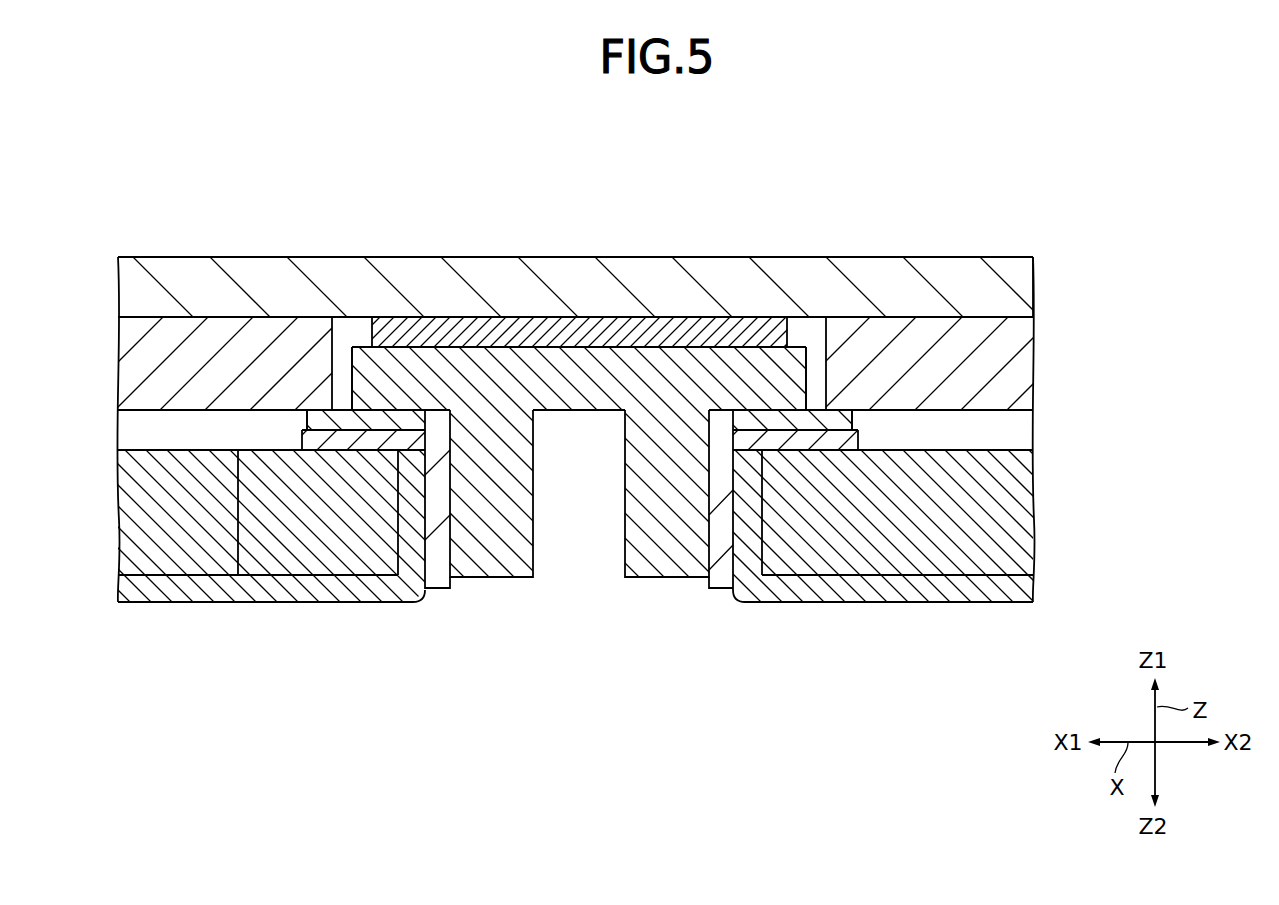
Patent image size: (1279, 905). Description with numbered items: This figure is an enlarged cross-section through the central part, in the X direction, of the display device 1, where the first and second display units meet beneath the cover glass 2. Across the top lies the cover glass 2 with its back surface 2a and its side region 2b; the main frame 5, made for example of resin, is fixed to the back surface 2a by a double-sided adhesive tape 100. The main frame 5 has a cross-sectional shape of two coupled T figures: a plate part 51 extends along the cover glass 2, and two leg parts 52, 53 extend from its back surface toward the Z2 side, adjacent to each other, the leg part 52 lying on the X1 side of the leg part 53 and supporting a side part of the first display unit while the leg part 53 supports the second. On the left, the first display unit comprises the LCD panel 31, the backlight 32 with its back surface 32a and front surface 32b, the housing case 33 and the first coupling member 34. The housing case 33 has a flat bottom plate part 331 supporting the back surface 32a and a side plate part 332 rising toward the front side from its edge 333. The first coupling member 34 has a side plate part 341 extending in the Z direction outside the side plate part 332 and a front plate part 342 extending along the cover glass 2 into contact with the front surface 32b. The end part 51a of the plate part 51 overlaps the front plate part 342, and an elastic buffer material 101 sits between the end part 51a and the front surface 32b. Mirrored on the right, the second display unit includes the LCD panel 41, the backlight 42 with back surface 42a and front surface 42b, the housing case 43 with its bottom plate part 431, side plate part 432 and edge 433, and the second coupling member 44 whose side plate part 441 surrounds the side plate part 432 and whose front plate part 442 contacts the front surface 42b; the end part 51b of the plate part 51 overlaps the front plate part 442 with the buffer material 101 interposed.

The display device 1 is at (630, 146).
The cover glass 2 is at (888, 275).
The back surface of the cover glass 2a is at (997, 317).
The side surface of base substrate 2b is at (1023, 257).
The main frame 5 is at (476, 338).
The liquid crystal display panel 31 is at (142, 362).
The backlight 32 is at (130, 515).
The back surface of the backlight 32a is at (185, 577).
The front surface of the backlight 32b is at (207, 448).
The housing case 33 is at (131, 613).
The first coupling member 34 is at (442, 599).
The LCD panel 41 is at (1025, 360).
The backlight 42 is at (1033, 522).
The back surface of the backlight 42a is at (883, 578).
The front surface of the backlight 42b is at (957, 448).
The housing case 43 is at (992, 614).
The second coupling member 44 is at (701, 600).
The plate part 51 is at (530, 357).
The end part of the plate part 51a is at (388, 372).
The end part of the plate part 51b is at (798, 370).
The leg part 52 is at (500, 550).
The leg part 53 is at (658, 555).
The double-sided adhesive tape 100 is at (682, 332).
The elastic buffer material 101 is at (310, 413).
The bottom plate part 331 is at (297, 600).
The side plate part 332 is at (408, 517).
The edge 333 is at (411, 586).
The side plate part 341 is at (442, 550).
The front plate part 342 is at (322, 418).
The bottom plate part 431 is at (940, 598).
The side plate part 432 is at (745, 507).
The edge 433 is at (745, 590).
The side plate part 441 is at (722, 587).
The front plate part 442 is at (829, 437).